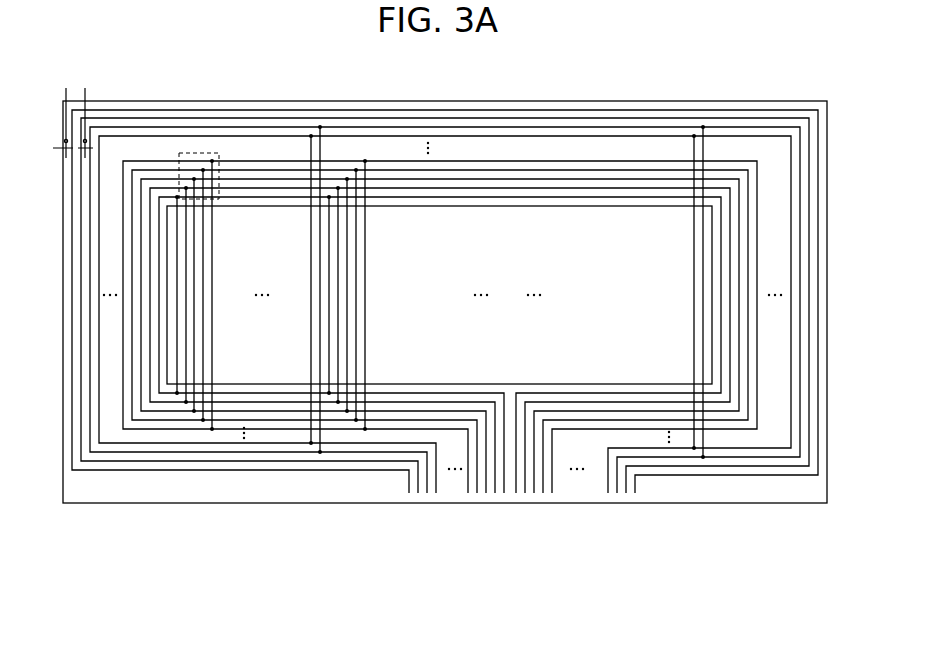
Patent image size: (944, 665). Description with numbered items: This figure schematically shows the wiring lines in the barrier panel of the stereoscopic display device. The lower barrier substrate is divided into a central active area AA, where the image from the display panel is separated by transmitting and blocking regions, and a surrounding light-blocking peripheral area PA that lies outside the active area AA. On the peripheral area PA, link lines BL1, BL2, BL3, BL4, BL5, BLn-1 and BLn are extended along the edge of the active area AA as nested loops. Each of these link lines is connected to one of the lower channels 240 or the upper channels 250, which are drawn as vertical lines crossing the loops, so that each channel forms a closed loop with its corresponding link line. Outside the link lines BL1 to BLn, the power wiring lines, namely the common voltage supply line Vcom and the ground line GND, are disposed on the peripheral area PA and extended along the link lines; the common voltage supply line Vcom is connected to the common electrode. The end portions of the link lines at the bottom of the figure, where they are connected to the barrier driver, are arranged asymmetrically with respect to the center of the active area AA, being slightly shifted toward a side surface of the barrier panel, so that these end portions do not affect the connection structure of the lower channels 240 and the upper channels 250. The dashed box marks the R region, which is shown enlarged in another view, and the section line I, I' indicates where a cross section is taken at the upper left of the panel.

The peripheral area PA is at (775, 480).
The active area AA is at (600, 269).
The R region R is at (201, 152).
The lower channels 240 is at (690, 149).
The upper channels 250 is at (708, 148).
The common voltage supply line Vcom is at (410, 486).
The ground line GND is at (636, 488).
The link line BL1 is at (504, 488).
The link line BL2 is at (534, 490).
The link line BL3 is at (486, 488).
The link line BL4 is at (552, 488).
The link line BL5 is at (467, 488).
The link line BLn-1 is at (434, 488).
The link line BLn is at (619, 488).
The section line I is at (63, 111).
The section line I' is at (85, 111).